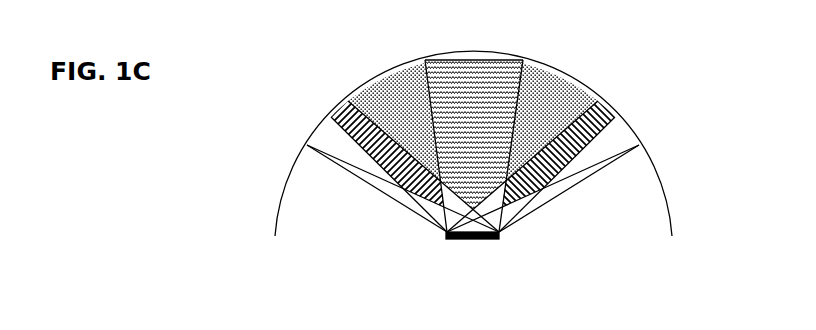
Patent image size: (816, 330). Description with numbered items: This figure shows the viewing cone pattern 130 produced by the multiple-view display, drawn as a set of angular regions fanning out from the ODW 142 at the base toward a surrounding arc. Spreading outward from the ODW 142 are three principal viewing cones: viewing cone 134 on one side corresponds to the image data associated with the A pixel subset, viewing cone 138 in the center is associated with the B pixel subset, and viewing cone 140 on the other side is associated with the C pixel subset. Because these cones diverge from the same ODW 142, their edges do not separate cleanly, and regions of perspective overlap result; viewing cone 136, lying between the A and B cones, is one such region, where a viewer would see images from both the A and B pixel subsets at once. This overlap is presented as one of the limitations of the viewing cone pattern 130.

The viewing cone pattern 130 is at (258, 190).
The viewing cone 134 is at (328, 118).
The viewing cone 136 is at (390, 95).
The viewing cone 138 is at (488, 73).
The viewing cone 140 is at (605, 104).
The ODW 142 is at (492, 245).